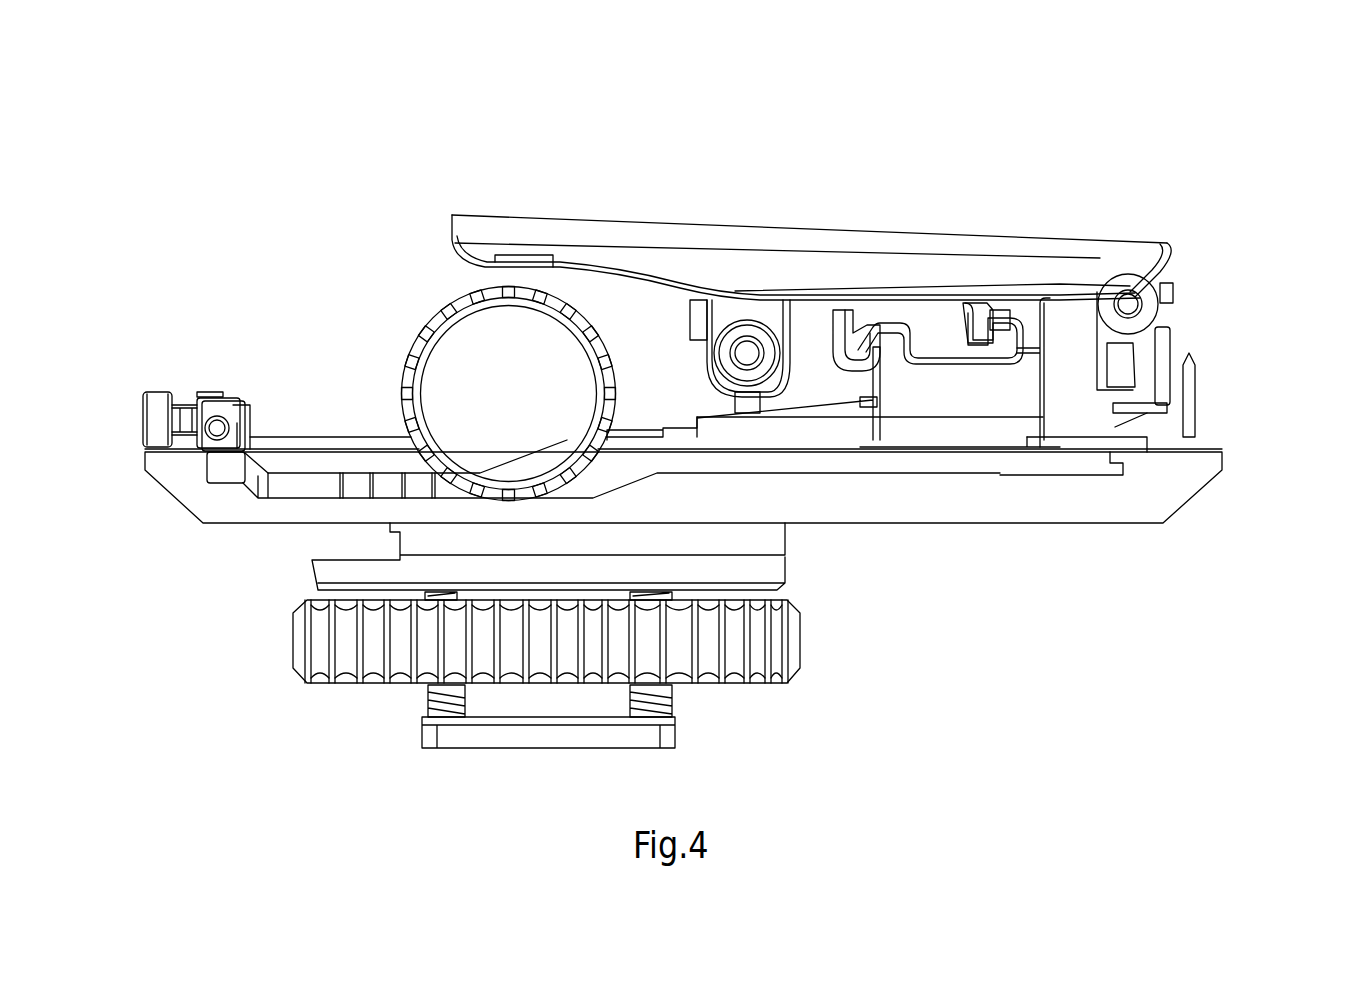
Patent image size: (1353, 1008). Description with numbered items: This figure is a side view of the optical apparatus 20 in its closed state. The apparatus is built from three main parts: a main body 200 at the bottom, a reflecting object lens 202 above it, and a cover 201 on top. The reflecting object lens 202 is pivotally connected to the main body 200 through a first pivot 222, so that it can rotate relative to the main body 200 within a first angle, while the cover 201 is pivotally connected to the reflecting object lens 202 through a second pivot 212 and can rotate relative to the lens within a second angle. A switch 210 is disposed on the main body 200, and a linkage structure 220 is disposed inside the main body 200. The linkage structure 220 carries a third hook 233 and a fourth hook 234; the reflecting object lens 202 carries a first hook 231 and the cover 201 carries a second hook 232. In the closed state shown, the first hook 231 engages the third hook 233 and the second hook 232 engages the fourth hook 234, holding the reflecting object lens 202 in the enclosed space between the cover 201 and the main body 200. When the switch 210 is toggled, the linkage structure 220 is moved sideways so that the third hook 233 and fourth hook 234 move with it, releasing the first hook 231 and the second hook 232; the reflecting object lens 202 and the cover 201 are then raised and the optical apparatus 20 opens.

The optical apparatus 20 is at (153, 91).
The main body 200 is at (1083, 497).
The cover 201 is at (825, 292).
The reflecting object lens 202 is at (817, 377).
The switch 210 is at (160, 413).
The second pivot 212 is at (748, 350).
The linkage structure 220 is at (980, 400).
The first pivot 222 is at (1173, 302).
The first hook 231 is at (858, 340).
The second hook 232 is at (985, 312).
The third hook 233 is at (892, 337).
The fourth hook 234 is at (1025, 322).